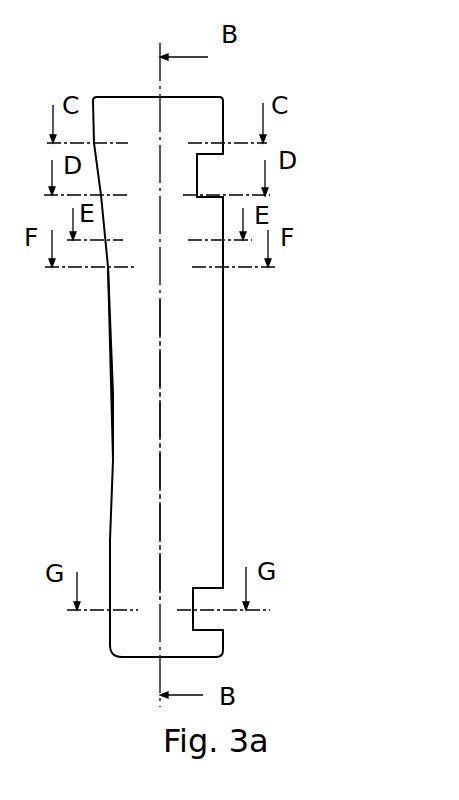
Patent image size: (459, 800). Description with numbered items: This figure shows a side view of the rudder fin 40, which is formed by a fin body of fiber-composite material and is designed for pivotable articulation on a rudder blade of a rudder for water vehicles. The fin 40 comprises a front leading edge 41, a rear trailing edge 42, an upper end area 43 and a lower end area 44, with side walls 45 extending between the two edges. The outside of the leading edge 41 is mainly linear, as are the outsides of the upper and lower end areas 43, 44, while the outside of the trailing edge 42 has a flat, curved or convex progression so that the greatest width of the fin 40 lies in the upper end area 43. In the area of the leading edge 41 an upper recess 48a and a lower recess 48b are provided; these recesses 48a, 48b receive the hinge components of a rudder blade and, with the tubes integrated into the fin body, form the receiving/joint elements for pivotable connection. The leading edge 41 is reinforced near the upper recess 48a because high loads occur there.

The fin 40 is at (295, 427).
The front leading edge 41 is at (224, 362).
The rear trailing edge 42 is at (112, 397).
The upper end area 43 is at (120, 92).
The lower end area 44 is at (135, 662).
The side walls 45 is at (147, 460).
The upper recess 48a is at (213, 163).
The lower recess 48b is at (213, 600).